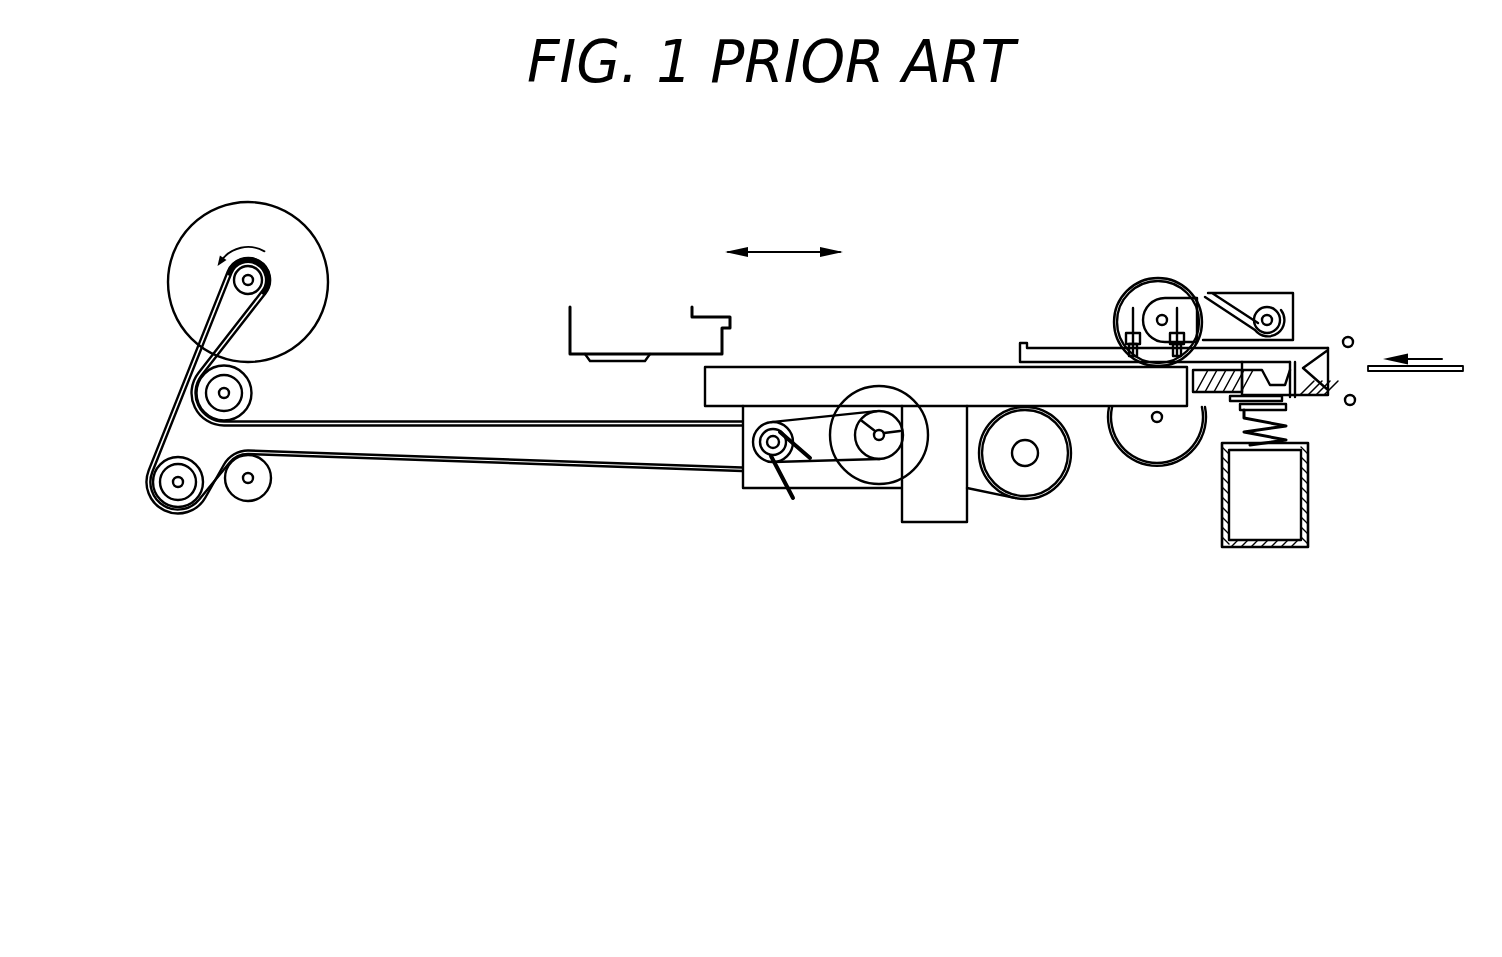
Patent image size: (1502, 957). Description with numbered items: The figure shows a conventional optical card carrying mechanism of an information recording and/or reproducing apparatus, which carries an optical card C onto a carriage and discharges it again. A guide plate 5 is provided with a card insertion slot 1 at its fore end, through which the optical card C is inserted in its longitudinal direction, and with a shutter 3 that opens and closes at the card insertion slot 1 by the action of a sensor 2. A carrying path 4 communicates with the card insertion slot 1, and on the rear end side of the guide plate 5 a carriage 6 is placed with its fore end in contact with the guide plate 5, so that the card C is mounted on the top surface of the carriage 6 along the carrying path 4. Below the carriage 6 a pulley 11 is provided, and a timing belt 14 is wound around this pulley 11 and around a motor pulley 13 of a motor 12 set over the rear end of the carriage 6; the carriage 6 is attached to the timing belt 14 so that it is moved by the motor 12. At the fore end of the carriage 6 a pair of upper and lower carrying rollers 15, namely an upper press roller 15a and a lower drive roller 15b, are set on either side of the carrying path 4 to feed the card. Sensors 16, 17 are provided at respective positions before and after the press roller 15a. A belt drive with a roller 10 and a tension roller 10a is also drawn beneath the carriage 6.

The card insertion slot 1 is at (1333, 368).
The sensor 2 is at (1352, 406).
The shutter 3 is at (1293, 398).
The carrying path 4 is at (1012, 357).
The guide plate 5 is at (1307, 340).
The carriage 6 is at (873, 367).
The drive roller 10 is at (845, 462).
The tension roller 10a is at (753, 490).
The pulley 11 is at (1032, 484).
The motor 12 is at (307, 264).
The motor pulley 13 is at (265, 270).
The timing belt 14 is at (588, 471).
The carrying rollers 15 is at (1183, 223).
The press roller 15a is at (1147, 296).
The drive roller 15b is at (1127, 417).
The sensor 16 is at (1143, 490).
The sensor 17 is at (1157, 464).
The optical card C is at (1435, 376).